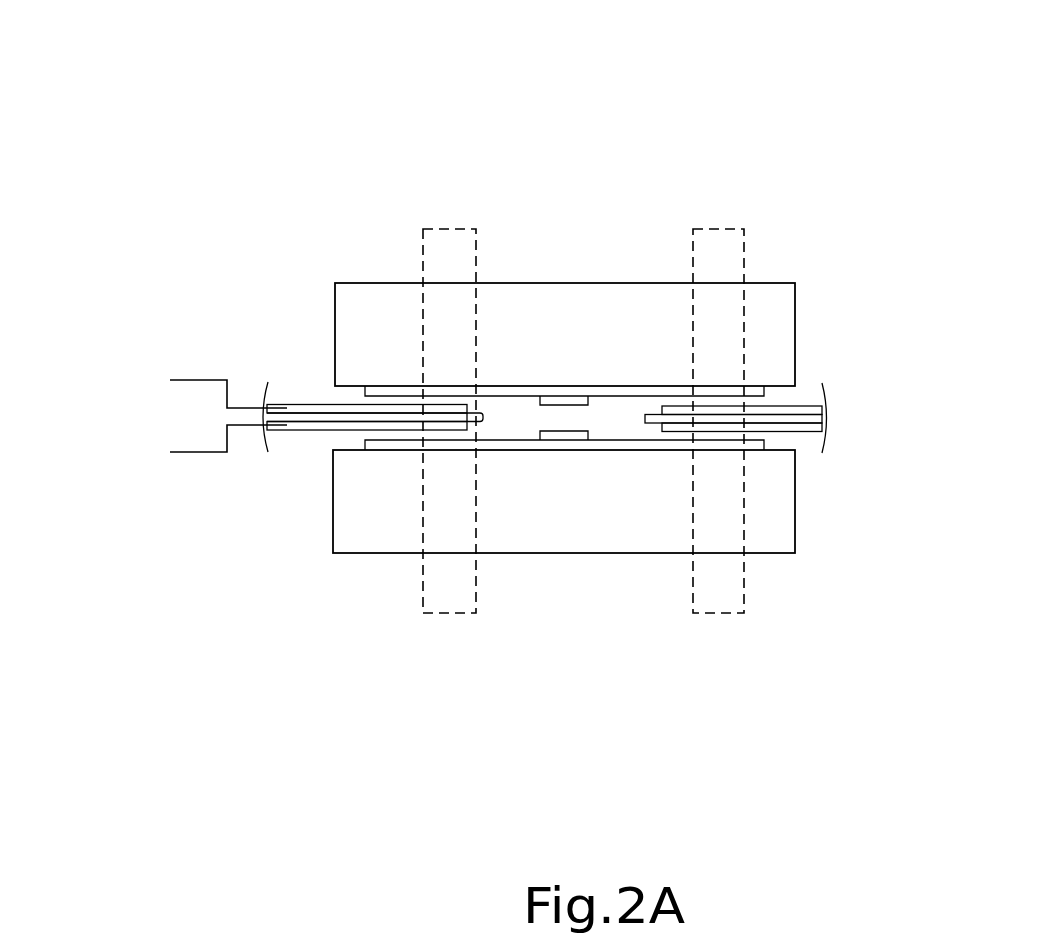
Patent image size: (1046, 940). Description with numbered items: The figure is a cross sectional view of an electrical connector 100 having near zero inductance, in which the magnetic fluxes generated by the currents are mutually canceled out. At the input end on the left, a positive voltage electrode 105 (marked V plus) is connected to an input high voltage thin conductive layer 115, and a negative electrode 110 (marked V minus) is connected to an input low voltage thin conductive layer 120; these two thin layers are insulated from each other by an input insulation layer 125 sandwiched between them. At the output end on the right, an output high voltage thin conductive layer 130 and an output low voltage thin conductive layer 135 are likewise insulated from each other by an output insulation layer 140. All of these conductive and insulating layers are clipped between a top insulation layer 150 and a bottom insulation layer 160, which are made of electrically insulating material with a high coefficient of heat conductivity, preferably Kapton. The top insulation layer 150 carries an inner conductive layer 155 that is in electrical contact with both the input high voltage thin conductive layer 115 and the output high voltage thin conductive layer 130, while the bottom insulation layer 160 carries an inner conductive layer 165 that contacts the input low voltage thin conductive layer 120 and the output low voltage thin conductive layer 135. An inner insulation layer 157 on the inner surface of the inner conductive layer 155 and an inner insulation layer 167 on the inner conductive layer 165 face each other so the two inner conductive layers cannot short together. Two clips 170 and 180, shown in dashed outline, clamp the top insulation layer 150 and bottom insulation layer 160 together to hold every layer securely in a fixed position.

The electrical connector 100 is at (832, 82).
The positive voltage electrode 105 is at (123, 382).
The negative electrode 110 is at (128, 447).
The input high voltage thin conductive layer 115 is at (320, 402).
The input low voltage thin conductive layer 120 is at (310, 427).
The input insulation layer 125 is at (485, 415).
The output high voltage thin conductive layer 130 is at (800, 407).
The output low voltage thin conductive layer 135 is at (807, 437).
The output insulation layer 140 is at (818, 420).
The top insulation layer 150 is at (595, 283).
The inner conductive layer 155 is at (650, 393).
The inner insulation layer 157 is at (571, 397).
The bottom insulation layer 160 is at (553, 555).
The inner conductive layer 165 is at (575, 445).
The inner insulation layer 167 is at (567, 435).
The clip 170 is at (450, 229).
The clip 180 is at (713, 229).